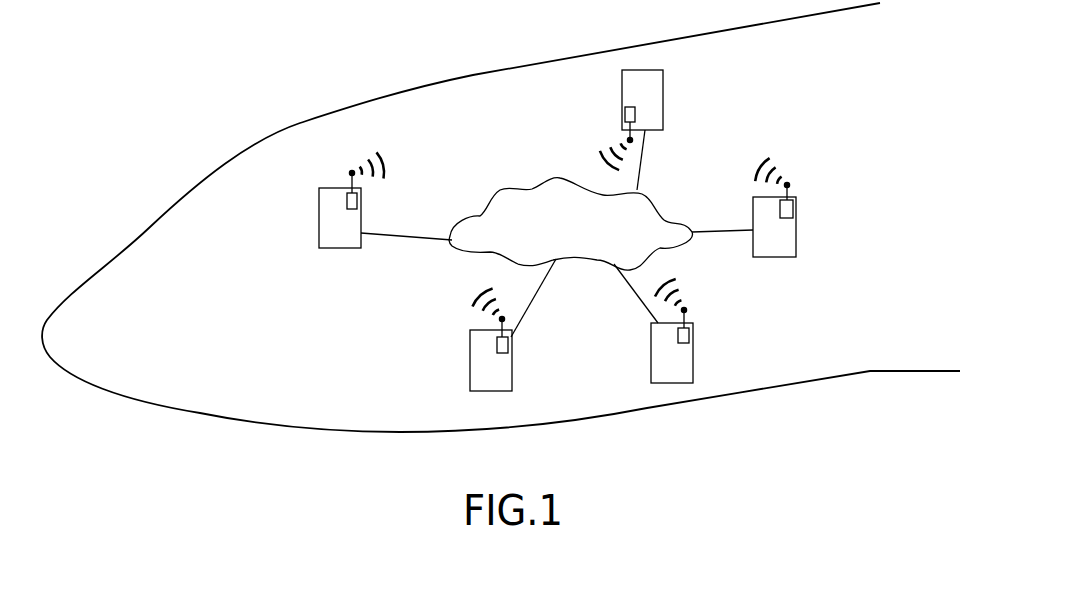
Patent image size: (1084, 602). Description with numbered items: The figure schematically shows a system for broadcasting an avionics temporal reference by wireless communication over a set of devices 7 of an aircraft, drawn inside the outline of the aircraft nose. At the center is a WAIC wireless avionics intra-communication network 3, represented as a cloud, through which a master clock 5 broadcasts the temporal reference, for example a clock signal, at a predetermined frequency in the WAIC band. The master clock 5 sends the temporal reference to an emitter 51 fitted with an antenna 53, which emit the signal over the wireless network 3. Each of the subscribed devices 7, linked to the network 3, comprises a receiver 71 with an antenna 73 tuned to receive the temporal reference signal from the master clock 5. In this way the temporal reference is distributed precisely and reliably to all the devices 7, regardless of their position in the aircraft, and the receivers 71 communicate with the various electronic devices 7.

The WAIC wireless avionics intra-communication network 3 is at (525, 188).
The master clock 5 is at (330, 194).
The emitter 51 is at (357, 202).
The antenna 53 is at (350, 173).
The device 7 is at (623, 230).
The receiver 71 is at (508, 346).
The antenna 73 is at (502, 330).